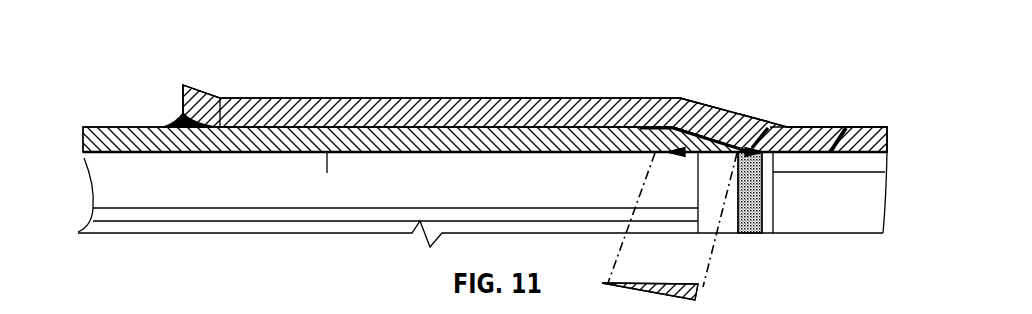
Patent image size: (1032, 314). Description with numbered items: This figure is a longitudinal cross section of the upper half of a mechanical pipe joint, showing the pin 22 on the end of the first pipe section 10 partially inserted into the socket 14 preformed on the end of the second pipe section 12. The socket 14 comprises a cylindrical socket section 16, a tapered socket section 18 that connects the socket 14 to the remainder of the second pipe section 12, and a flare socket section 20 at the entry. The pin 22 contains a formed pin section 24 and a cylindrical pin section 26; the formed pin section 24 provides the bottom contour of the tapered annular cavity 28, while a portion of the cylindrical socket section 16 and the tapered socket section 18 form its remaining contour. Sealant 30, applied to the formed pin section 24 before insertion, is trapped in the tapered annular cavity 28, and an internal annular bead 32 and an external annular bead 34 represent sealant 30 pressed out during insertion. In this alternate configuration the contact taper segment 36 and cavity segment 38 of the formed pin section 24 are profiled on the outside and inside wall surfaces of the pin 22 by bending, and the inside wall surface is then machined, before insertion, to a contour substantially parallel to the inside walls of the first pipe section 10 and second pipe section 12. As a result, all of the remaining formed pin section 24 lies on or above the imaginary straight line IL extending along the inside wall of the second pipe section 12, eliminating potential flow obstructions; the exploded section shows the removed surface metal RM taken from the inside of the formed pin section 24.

The first pipe section 10 is at (110, 140).
The second pipe section 12 is at (832, 127).
The socket 14 is at (518, 76).
The cylindrical socket section 16 is at (415, 112).
The tapered socket section 18 is at (753, 123).
The flare socket section 20 is at (205, 102).
The pin 22 is at (486, 174).
The formed pin section 24 is at (634, 165).
The cylindrical pin section 26 is at (312, 172).
The tapered annular cavity 28 is at (670, 127).
The sealant 30 is at (690, 100).
The internal annular bead 32 is at (768, 128).
The external annular bead 34 is at (182, 118).
The contact taper segment 36 is at (675, 140).
The cavity segment 38 is at (723, 147).
The imaginary straight line IL is at (848, 127).
The removed surface metal RM is at (703, 292).